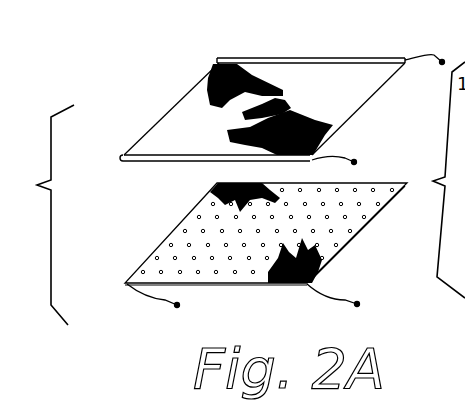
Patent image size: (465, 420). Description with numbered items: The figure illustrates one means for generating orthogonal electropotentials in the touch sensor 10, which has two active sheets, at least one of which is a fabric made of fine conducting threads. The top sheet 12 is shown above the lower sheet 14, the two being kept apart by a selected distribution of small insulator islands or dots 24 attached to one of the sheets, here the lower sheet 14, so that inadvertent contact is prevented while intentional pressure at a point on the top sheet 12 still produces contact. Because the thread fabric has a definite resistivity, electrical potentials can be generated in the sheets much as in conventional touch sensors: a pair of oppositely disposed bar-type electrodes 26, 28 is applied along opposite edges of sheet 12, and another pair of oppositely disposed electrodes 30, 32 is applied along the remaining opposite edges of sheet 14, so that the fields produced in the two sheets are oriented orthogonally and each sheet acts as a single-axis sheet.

The touch sensor 10 is at (147, 98).
The top sheet 12 is at (266, 101).
The lower sheet 14 is at (266, 252).
The insulator dots 24 is at (318, 258).
The bar-type electrode 26 is at (288, 58).
The bar-type electrode 28 is at (155, 162).
The electrode 30 is at (123, 283).
The electrode 32 is at (358, 237).